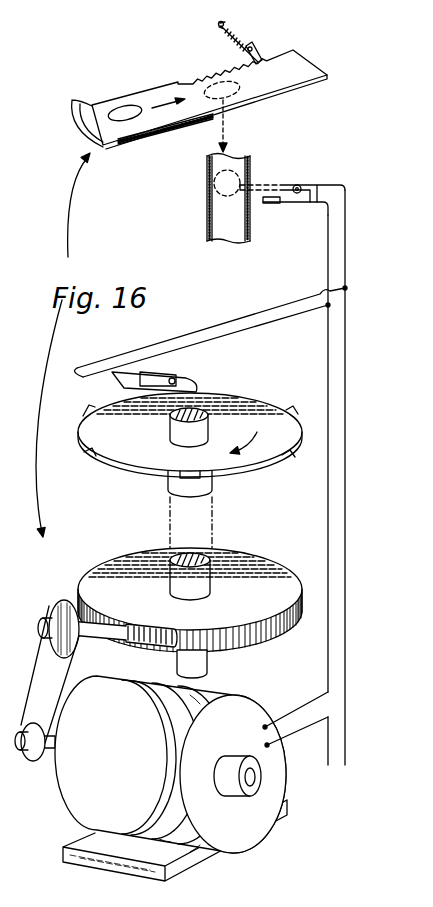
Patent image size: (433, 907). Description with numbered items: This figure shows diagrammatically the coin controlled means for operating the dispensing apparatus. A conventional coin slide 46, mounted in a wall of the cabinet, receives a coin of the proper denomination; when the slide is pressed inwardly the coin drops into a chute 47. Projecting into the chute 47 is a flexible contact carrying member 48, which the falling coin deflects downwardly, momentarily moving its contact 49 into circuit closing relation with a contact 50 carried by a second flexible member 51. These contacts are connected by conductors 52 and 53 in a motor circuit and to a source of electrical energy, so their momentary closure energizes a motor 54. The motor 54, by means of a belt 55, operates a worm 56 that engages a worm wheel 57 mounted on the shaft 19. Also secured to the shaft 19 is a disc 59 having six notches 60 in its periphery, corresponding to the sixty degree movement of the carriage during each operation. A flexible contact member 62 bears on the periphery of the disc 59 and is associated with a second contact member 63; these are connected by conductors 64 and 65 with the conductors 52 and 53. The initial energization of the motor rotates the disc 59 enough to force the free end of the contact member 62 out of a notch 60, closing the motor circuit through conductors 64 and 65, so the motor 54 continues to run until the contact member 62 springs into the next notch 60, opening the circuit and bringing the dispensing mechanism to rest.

The coin slide 46 is at (104, 110).
The chute 47 is at (214, 209).
The flexible contact carrying member 48 is at (258, 185).
The contact 49 is at (280, 187).
The contact 50 is at (264, 202).
The flexible member 51 is at (303, 203).
The conductor 52 is at (344, 468).
The conductor 53 is at (328, 508).
The motor 54 is at (245, 705).
The belt 55 is at (43, 658).
The worm 56 is at (163, 640).
The worm wheel 57 is at (237, 560).
The disc 59 is at (233, 407).
The notches 60 is at (280, 413).
The flexible contact member 62 is at (197, 387).
The second contact member 63 is at (177, 375).
The conductor 64 is at (197, 332).
The conductor 65 is at (237, 332).
The shaft 19 is at (203, 523).